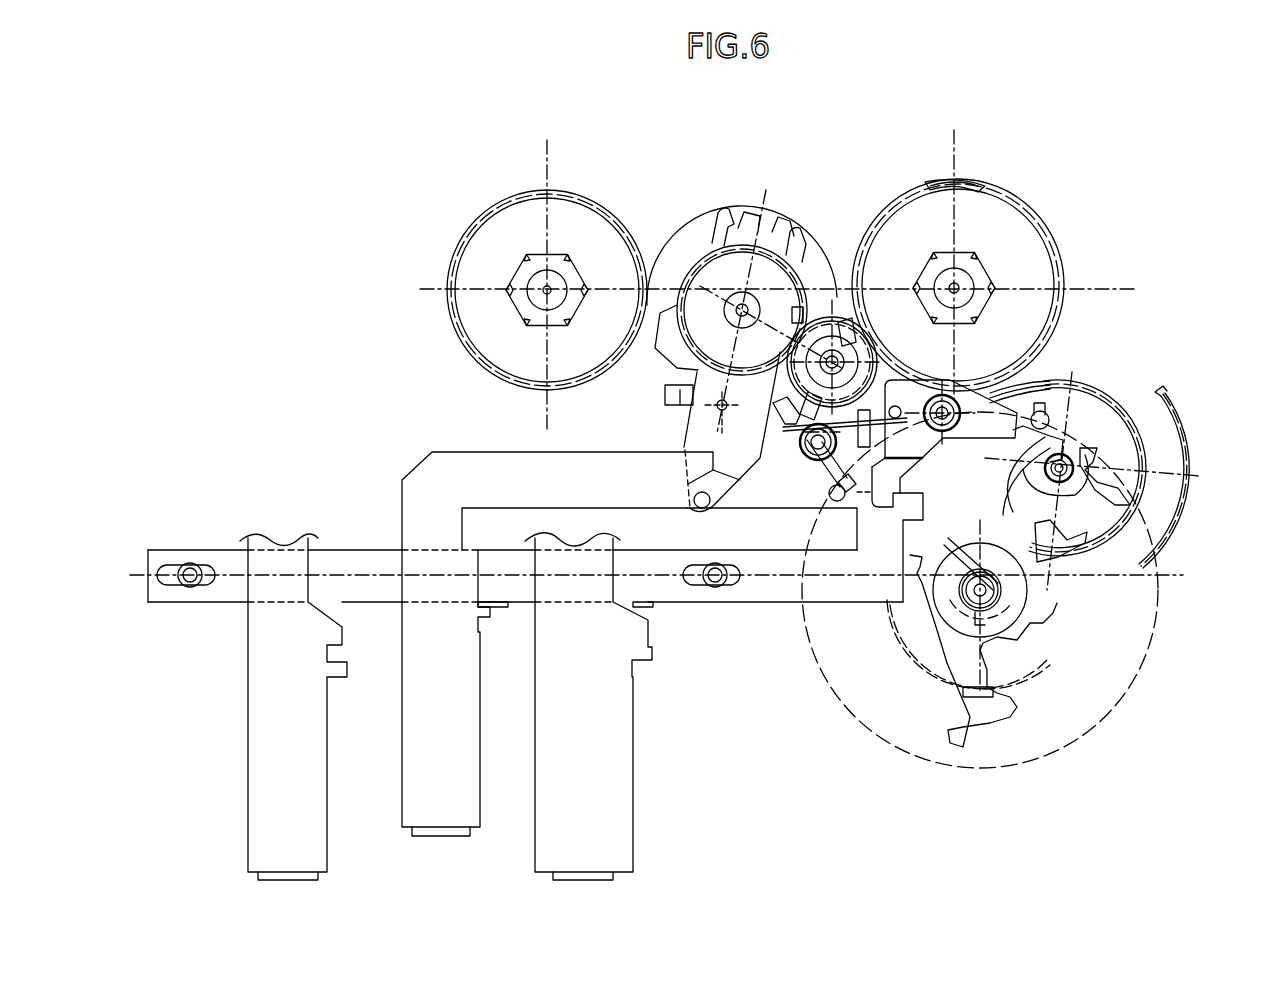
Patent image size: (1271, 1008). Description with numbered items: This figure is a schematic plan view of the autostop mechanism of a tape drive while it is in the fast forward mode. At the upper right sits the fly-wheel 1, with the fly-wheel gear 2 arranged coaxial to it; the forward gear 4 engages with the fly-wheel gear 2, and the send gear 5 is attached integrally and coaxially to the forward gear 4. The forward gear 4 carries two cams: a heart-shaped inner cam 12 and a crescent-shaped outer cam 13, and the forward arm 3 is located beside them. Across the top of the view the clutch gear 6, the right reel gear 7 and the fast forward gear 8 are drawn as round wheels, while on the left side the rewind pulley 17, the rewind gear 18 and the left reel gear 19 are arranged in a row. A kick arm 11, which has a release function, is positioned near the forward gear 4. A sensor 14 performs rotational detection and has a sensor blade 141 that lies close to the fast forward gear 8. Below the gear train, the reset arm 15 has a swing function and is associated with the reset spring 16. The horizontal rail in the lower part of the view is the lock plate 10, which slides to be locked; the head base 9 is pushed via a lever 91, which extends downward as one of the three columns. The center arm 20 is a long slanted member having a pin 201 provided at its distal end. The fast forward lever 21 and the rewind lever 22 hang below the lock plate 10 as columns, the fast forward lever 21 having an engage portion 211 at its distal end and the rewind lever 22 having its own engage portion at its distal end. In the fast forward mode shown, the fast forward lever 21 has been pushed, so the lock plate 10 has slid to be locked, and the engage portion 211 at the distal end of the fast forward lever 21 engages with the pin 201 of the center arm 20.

The fly-wheel 1 is at (1097, 715).
The fly-wheel gear 2 is at (1000, 605).
The forward arm 3 is at (1122, 503).
The forward gear 4 is at (1180, 518).
The send gear 5 is at (1140, 550).
The clutch gear 6 is at (1055, 244).
The right reel gear 7 is at (892, 210).
The fast forward gear 8 is at (818, 333).
The head base 9 is at (560, 537).
The lever 91 is at (577, 878).
The lock plate 10 is at (768, 592).
The kick arm 11 is at (1068, 432).
The inner cam 12 is at (1075, 458).
The outer cam 13 is at (1032, 418).
The sensor 14 is at (830, 340).
The sensor blade 141 is at (838, 330).
The reset arm 15 is at (827, 482).
The reset spring 16 is at (807, 484).
The rewind pulley 17 is at (678, 241).
The rewind gear 18 is at (703, 265).
The left reel gear 19 is at (592, 207).
The center arm 20 is at (700, 440).
The pin 201 is at (708, 482).
The fast forward lever 21 is at (443, 833).
The engage portion 211 is at (718, 488).
The rewind lever 22 is at (296, 876).